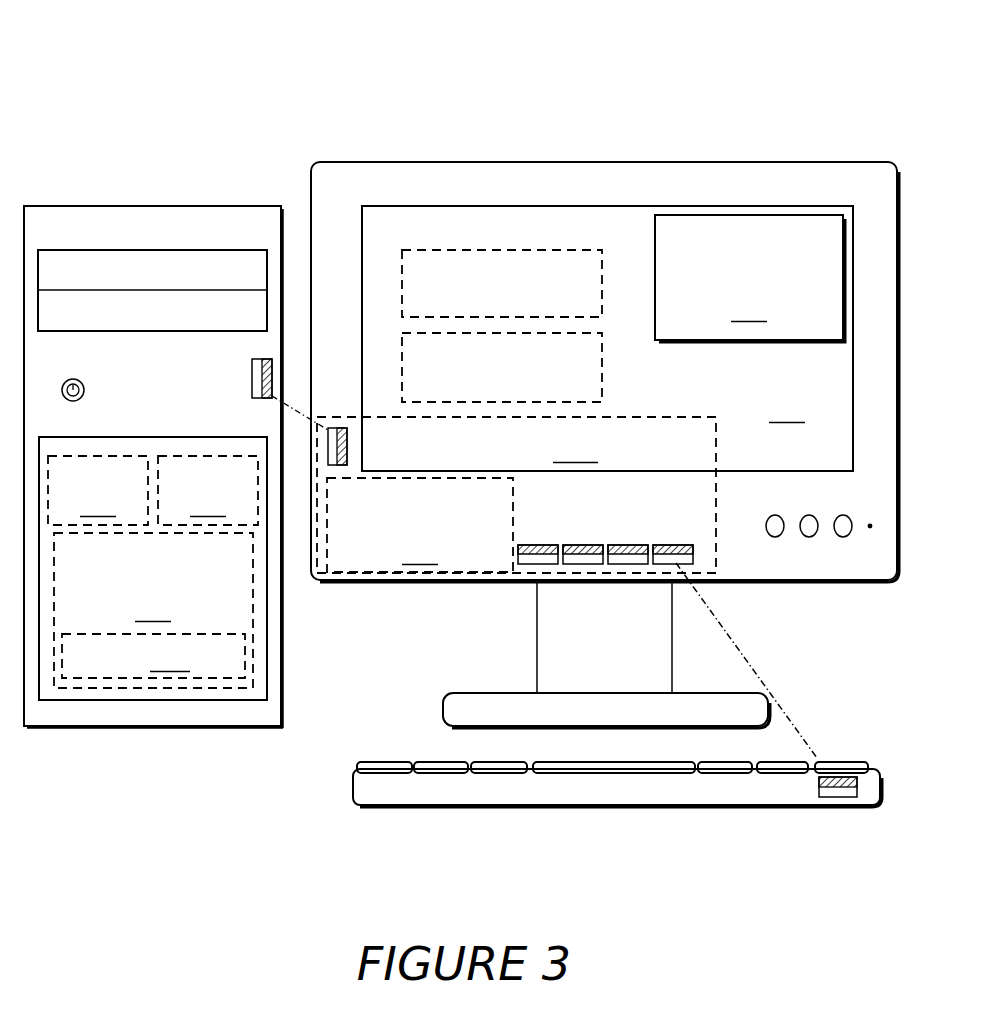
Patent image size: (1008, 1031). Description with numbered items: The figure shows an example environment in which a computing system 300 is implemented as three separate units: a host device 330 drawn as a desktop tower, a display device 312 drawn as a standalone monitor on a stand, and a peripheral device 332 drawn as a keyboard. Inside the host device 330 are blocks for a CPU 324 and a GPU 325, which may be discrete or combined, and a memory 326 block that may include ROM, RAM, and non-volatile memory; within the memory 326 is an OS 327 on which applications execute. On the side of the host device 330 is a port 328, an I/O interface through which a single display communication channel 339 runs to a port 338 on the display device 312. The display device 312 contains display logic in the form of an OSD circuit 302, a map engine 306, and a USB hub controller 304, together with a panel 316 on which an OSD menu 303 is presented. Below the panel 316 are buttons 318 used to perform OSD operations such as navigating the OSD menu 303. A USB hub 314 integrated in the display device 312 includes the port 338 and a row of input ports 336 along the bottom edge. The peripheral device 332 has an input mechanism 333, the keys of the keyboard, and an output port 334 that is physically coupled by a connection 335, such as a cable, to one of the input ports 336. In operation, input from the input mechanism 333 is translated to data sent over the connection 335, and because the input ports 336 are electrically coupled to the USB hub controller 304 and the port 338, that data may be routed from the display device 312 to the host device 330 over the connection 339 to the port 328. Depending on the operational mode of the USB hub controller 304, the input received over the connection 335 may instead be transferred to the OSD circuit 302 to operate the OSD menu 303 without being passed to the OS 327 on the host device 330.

The computing system 300 is at (180, 50).
The OSD circuit 302 is at (502, 283).
The OSD menu 303 is at (750, 278).
The USB hub controller 304 is at (420, 525).
The map engine 306 is at (502, 367).
The display device 312 is at (466, 122).
The USB hub 314 is at (516, 495).
The panel 316 is at (607, 338).
The buttons 318 is at (839, 560).
The CPU 324 is at (98, 490).
The GPU 325 is at (208, 490).
The memory 326 is at (153, 610).
The OS 327 is at (153, 656).
The port 328 is at (244, 363).
The host device 330 is at (196, 176).
The peripheral device 332 is at (446, 834).
The input mechanism 333 is at (438, 747).
The output port 334 is at (830, 814).
The connection 335 is at (762, 665).
The input ports 336 is at (522, 592).
The port 338 is at (336, 422).
The display communication channel 339 is at (300, 421).